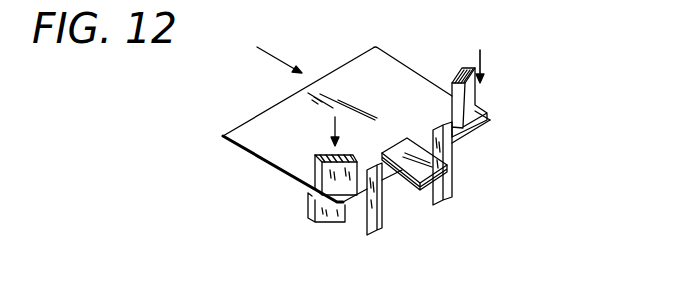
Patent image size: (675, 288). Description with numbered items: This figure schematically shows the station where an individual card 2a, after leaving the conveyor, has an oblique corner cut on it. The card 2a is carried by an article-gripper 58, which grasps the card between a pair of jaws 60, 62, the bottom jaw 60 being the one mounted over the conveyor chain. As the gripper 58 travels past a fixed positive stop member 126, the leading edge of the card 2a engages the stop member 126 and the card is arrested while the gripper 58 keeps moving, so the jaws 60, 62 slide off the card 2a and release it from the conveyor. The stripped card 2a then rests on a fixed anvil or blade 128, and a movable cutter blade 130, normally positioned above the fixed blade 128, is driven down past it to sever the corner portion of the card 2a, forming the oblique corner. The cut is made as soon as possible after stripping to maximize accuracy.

The cut card 2a is at (388, 103).
The movable cutter blade 130 is at (327, 169).
The fixed anvil or blade 128 is at (333, 217).
The positive stop member 126 is at (378, 237).
The jaw 62 is at (417, 150).
The bottom jaw 60 is at (402, 177).
The article-gripper 58 is at (447, 168).